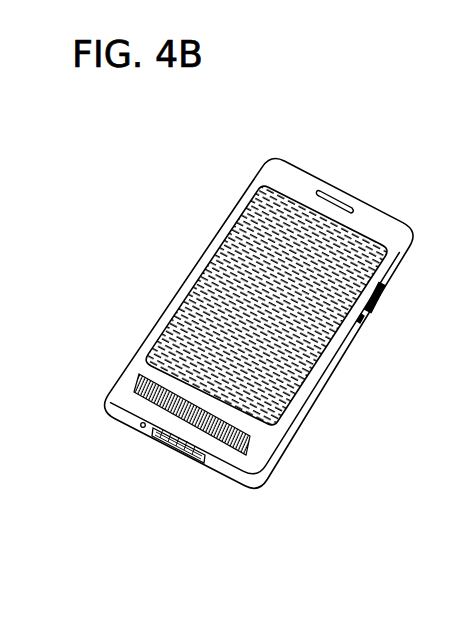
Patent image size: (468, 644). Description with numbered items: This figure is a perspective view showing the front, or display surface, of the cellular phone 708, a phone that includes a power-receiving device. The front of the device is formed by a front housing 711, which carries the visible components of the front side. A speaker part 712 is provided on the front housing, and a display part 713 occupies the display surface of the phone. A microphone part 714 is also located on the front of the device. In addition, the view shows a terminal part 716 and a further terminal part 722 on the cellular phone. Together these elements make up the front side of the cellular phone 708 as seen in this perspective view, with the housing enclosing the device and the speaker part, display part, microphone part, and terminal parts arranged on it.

The cellular phone 708 is at (263, 597).
The front housing 711 is at (265, 440).
The speaker part 712 is at (341, 196).
The display part 713 is at (198, 304).
The microphone part 714 is at (140, 383).
The terminal part 716 is at (167, 444).
The terminal part 722 is at (372, 310).